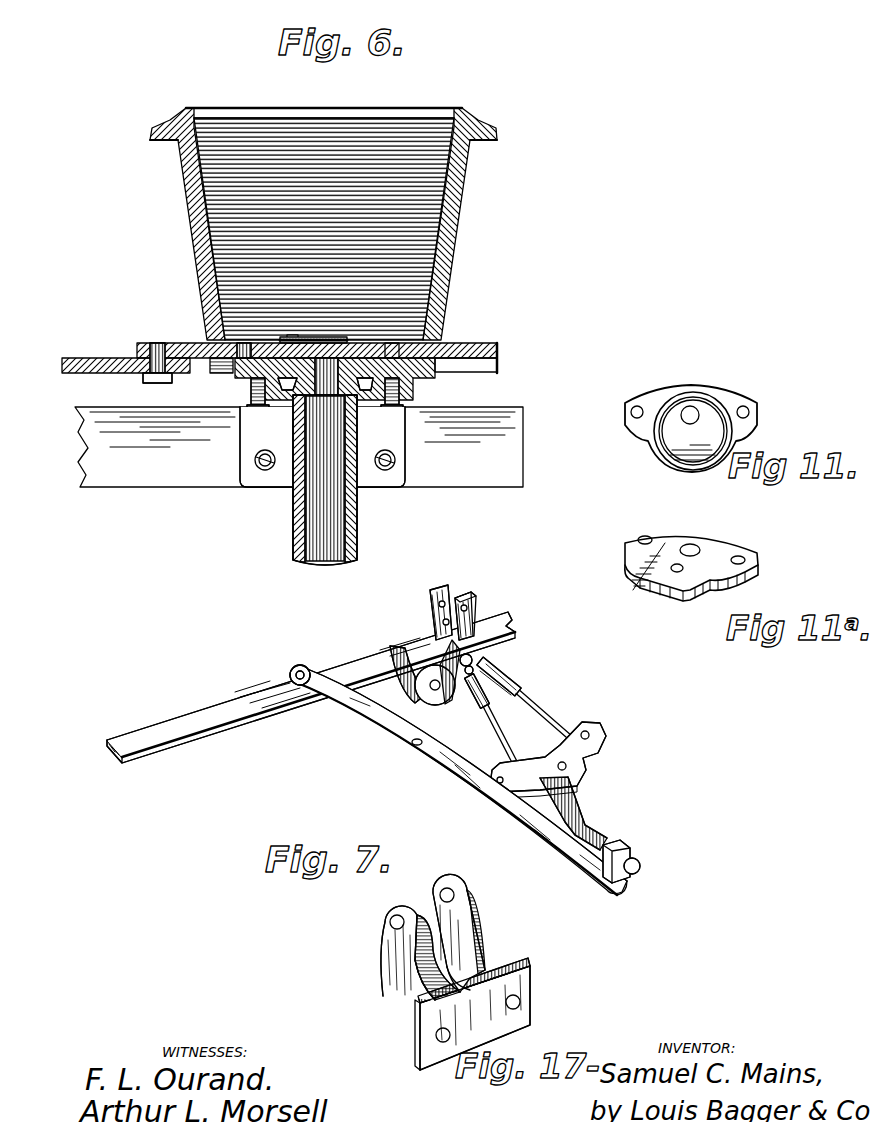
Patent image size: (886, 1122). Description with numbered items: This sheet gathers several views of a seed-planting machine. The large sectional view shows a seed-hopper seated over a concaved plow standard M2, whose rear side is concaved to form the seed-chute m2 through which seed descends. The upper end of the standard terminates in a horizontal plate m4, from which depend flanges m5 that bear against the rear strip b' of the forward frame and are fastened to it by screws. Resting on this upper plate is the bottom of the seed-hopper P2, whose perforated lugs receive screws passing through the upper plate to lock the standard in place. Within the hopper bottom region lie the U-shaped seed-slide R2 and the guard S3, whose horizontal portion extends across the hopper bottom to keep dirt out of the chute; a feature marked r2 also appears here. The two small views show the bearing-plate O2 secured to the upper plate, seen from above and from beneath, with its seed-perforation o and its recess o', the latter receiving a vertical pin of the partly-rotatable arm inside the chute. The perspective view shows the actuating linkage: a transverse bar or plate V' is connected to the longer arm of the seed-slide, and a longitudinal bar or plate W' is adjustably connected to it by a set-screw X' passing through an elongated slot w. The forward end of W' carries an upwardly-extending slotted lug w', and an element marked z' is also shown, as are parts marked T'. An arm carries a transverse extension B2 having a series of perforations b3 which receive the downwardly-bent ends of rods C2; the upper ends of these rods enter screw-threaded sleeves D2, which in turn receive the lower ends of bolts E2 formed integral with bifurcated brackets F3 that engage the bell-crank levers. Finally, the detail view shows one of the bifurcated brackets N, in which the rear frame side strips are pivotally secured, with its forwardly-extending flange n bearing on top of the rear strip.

In FIG. 6, the bearing-plate O2 is at (455, 190).
In FIG. 11, the bearing-plate O2 is at (720, 397).
In FIG. 11A, the bearing-plate O2 is at (717, 545).
In FIG. 6, the guard S3 is at (292, 332).
In FIG. 6, the bottom ring r2 is at (316, 310).
In FIG. 6, the U-shaped seed-slide R2 is at (392, 352).
In FIG. 6, the bottom of the seed-hopper P2 is at (441, 345).
In FIG. 6, the horizontal plate m4 is at (411, 404).
In FIG. 6, the rear strip of the front frame b' is at (299, 436).
In FIG. 6, the flanges m5 is at (258, 472).
In FIG. 6, the concaved plow standard M2 is at (293, 526).
In FIG. 6, the seed-chute m2 is at (327, 547).
In FIG. 11, the seed-perforation o is at (659, 429).
In FIG. 11A, the seed-perforation o is at (698, 531).
In FIG. 11A, the recess o' is at (669, 595).
In FIG. 7, the transverse bar or plate V' is at (311, 687).
In FIG. 7, the upright T' is at (437, 640).
In FIG. 7, the bifurcated brackets F3 is at (435, 643).
In FIG. 7, the bolts E2 is at (478, 665).
In FIG. 7, the screw-threaded sockets or sleeves D2 is at (492, 690).
In FIG. 7, the rods C2 is at (542, 700).
In FIG. 7, the transverse extension B2 is at (600, 736).
In FIG. 7, the perforations b3 is at (590, 729).
In FIG. 7, the strap z' is at (581, 813).
In FIG. 7, the longitudinal bar or plate W' is at (458, 780).
In FIG. 7, the elongated slot w is at (297, 664).
In FIG. 7, the set-screw X' is at (326, 650).
In FIG. 7, the slotted lug w' is at (637, 861).
In FIG. 17, the bifurcated brackets N is at (385, 962).
In FIG. 17, the forwardly-extending flanges n is at (505, 972).